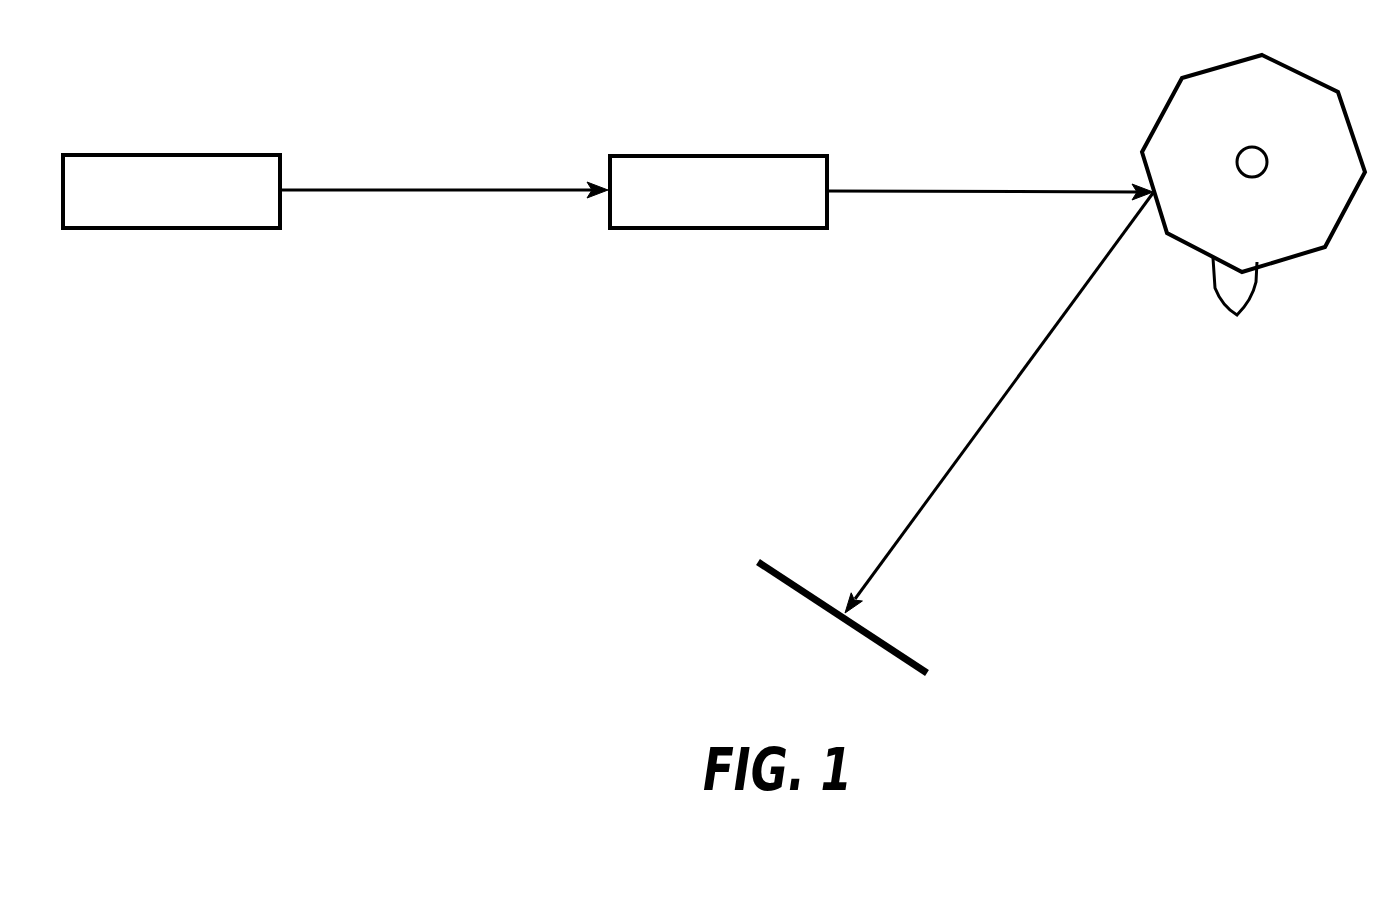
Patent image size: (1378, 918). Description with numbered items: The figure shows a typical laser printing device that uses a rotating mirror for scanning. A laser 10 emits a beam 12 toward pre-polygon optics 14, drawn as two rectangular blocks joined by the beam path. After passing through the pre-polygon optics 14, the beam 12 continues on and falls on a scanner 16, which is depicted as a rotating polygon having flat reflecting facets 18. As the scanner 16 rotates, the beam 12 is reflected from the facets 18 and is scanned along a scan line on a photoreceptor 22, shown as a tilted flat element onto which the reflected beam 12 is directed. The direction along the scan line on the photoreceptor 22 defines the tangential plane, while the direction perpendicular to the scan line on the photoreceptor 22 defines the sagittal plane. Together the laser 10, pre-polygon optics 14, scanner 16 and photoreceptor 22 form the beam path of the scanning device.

The laser 10 is at (172, 155).
The beam 12 is at (408, 190).
The pre-polygon optics 14 is at (717, 156).
The scanner 16 is at (1295, 85).
The flat reflecting facets 18 is at (1235, 305).
The photoreceptor 22 is at (893, 643).